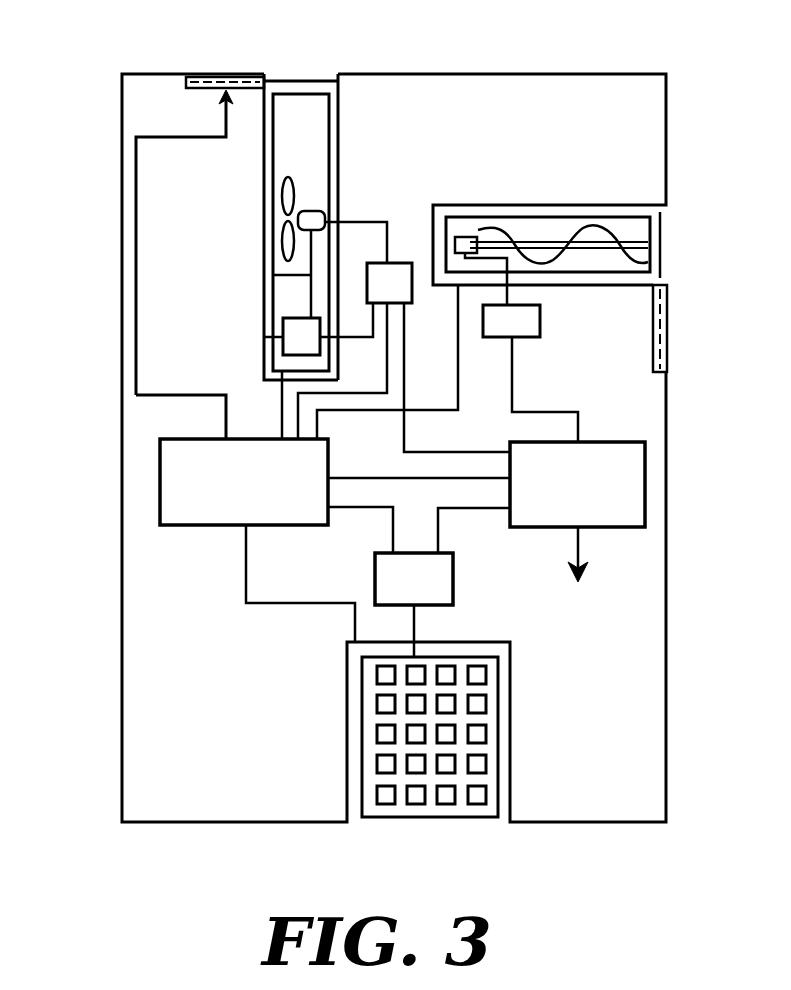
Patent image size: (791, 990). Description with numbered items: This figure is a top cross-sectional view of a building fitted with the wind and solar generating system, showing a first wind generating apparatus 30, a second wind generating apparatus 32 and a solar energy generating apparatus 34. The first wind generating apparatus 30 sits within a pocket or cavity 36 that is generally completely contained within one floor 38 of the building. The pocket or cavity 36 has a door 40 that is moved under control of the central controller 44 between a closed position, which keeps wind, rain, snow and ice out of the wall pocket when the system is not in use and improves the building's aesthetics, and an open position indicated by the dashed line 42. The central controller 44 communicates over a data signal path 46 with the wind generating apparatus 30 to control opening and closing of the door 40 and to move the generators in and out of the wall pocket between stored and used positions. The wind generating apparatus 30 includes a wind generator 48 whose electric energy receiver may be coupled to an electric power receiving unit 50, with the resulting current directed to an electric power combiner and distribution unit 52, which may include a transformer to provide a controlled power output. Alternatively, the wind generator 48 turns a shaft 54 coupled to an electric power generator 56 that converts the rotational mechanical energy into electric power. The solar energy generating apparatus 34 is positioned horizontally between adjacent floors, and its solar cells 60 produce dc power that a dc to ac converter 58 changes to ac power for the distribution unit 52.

The first wind generating apparatus 30 is at (302, 94).
The second wind generating apparatus 32 is at (660, 234).
The solar energy generating apparatus 34 is at (460, 817).
The pocket or cavity 36 is at (264, 168).
The floor 38 is at (122, 170).
The door 40 is at (320, 81).
The dashed line 42 is at (226, 77).
The central controller 44 is at (195, 439).
The data signal path 46 is at (282, 409).
The wind generator 48 is at (316, 211).
The electric power receiving unit 50 is at (395, 263).
The electric power combiner and distribution unit 52 is at (603, 442).
The shaft 54 is at (273, 275).
The electric power generator 56 is at (267, 337).
The dc to ac converter 58 is at (453, 562).
The solar cells 60 is at (380, 734).